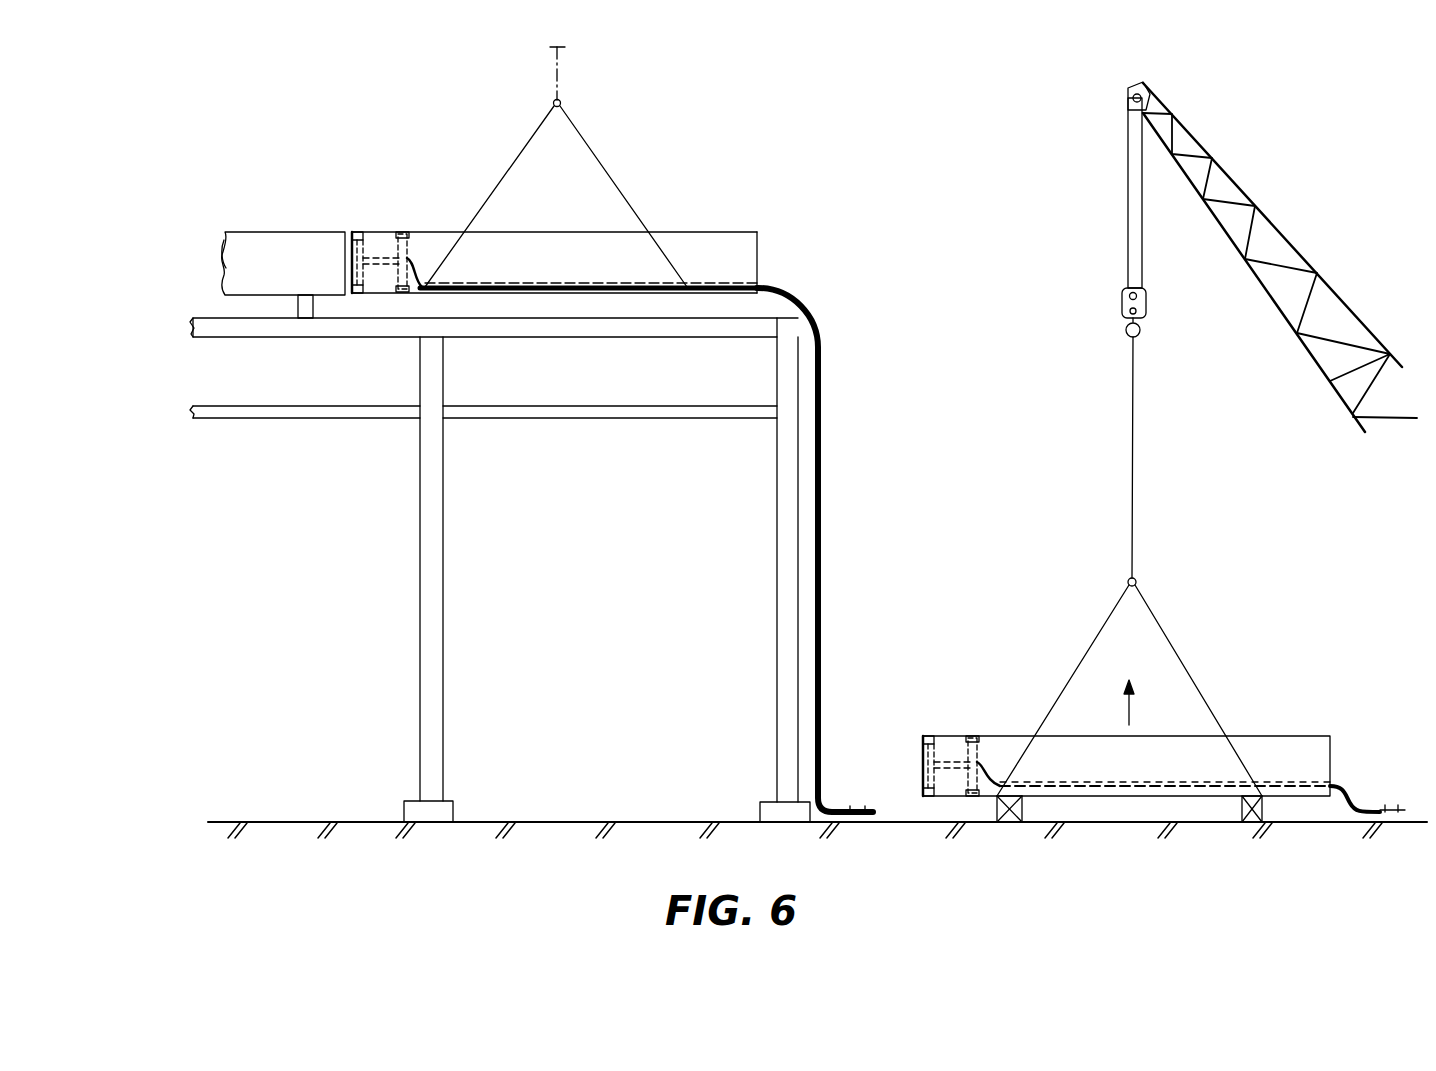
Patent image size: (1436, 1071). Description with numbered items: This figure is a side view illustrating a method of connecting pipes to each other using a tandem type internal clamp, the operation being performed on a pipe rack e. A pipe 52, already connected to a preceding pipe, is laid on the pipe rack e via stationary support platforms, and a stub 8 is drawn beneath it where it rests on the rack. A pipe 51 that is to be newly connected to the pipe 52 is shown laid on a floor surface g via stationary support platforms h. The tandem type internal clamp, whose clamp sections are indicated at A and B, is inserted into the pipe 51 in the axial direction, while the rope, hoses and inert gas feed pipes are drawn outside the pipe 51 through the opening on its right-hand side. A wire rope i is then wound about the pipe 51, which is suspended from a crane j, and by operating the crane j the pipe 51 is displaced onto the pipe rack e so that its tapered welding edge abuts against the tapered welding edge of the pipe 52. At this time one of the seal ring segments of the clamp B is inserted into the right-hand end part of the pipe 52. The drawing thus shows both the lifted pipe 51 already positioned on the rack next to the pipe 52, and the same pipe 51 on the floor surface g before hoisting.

The pipe 51 is at (705, 240).
The pipe 52 is at (320, 245).
The support stub 8 is at (312, 300).
The coupling A is at (408, 258).
The clamp B is at (358, 237).
The pipe rack e is at (766, 475).
The floor surface g is at (1290, 828).
The stationary support platforms h is at (1022, 808).
The wire rope i is at (1160, 628).
The crane j is at (1262, 238).